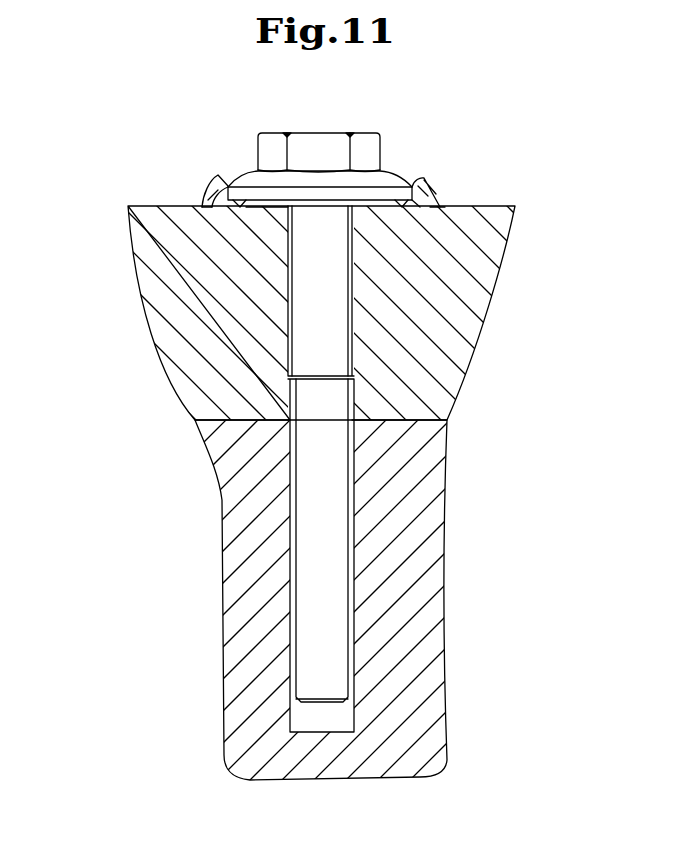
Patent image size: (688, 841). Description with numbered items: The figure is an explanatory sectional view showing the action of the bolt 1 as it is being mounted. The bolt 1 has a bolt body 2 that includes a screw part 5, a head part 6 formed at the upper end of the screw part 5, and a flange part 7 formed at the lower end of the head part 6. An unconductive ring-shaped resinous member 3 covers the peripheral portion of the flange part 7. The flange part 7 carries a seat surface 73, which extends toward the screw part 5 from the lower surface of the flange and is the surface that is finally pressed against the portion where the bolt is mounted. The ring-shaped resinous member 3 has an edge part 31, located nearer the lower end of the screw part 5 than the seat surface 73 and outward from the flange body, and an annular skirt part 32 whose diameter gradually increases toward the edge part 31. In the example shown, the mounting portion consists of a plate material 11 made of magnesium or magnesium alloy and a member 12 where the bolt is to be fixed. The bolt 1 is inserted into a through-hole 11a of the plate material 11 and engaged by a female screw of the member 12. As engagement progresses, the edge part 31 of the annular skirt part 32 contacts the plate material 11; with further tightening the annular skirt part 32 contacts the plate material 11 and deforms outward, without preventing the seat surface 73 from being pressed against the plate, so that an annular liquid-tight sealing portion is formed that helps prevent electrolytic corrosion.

The bolt 1 is at (333, 220).
The bolt body 2 is at (330, 331).
The ring-shaped resinous member 3 is at (437, 207).
The screw part 5 is at (352, 497).
The head part 6 is at (275, 152).
The flange part 7 is at (382, 195).
The plate material 11 is at (453, 323).
The through-hole 11a is at (352, 251).
The member where the bolt is to be fixed 12 is at (412, 617).
The edge part 31 is at (440, 188).
The annular skirt part 32 is at (222, 207).
The seat surface 73 is at (262, 207).